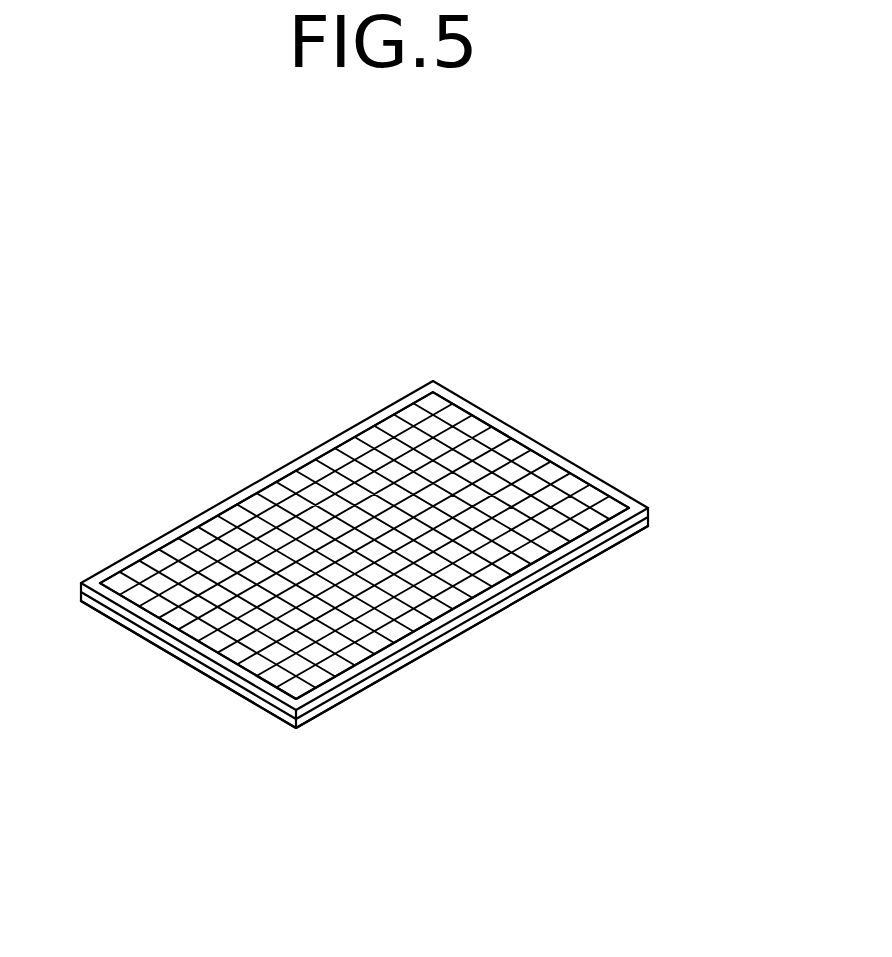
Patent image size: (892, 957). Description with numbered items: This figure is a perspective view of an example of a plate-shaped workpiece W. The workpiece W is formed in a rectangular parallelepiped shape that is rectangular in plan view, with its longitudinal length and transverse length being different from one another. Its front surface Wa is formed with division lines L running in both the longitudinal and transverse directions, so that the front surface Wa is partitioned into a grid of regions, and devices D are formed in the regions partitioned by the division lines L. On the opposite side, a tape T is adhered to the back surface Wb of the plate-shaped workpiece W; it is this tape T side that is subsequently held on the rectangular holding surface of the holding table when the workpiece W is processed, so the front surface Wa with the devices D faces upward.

The plate-shaped workpiece W is at (583, 433).
The front surface Wa is at (250, 490).
The back surface Wb is at (465, 625).
The tape T is at (312, 718).
The division lines L is at (228, 600).
The devices D is at (352, 493).